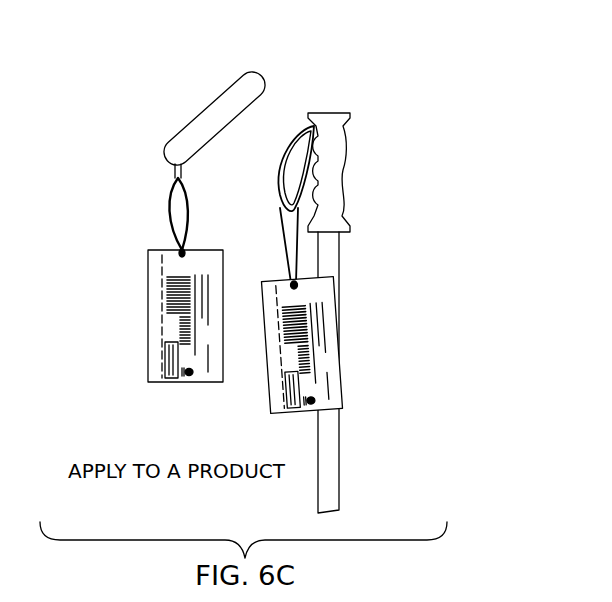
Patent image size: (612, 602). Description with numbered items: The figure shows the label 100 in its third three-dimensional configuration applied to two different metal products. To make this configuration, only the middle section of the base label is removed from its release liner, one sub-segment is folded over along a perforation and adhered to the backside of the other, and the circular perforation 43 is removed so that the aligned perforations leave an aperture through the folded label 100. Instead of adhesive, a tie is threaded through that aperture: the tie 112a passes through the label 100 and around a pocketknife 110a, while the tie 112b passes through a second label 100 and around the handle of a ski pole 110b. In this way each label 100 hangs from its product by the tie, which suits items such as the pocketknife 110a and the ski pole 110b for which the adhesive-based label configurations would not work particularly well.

The label 100 is at (148, 318).
The circular perforation 43 is at (170, 263).
The pocketknife 110a is at (255, 73).
The ski pole 110b is at (340, 113).
The tie 112a is at (178, 203).
The tie 112b is at (288, 225).